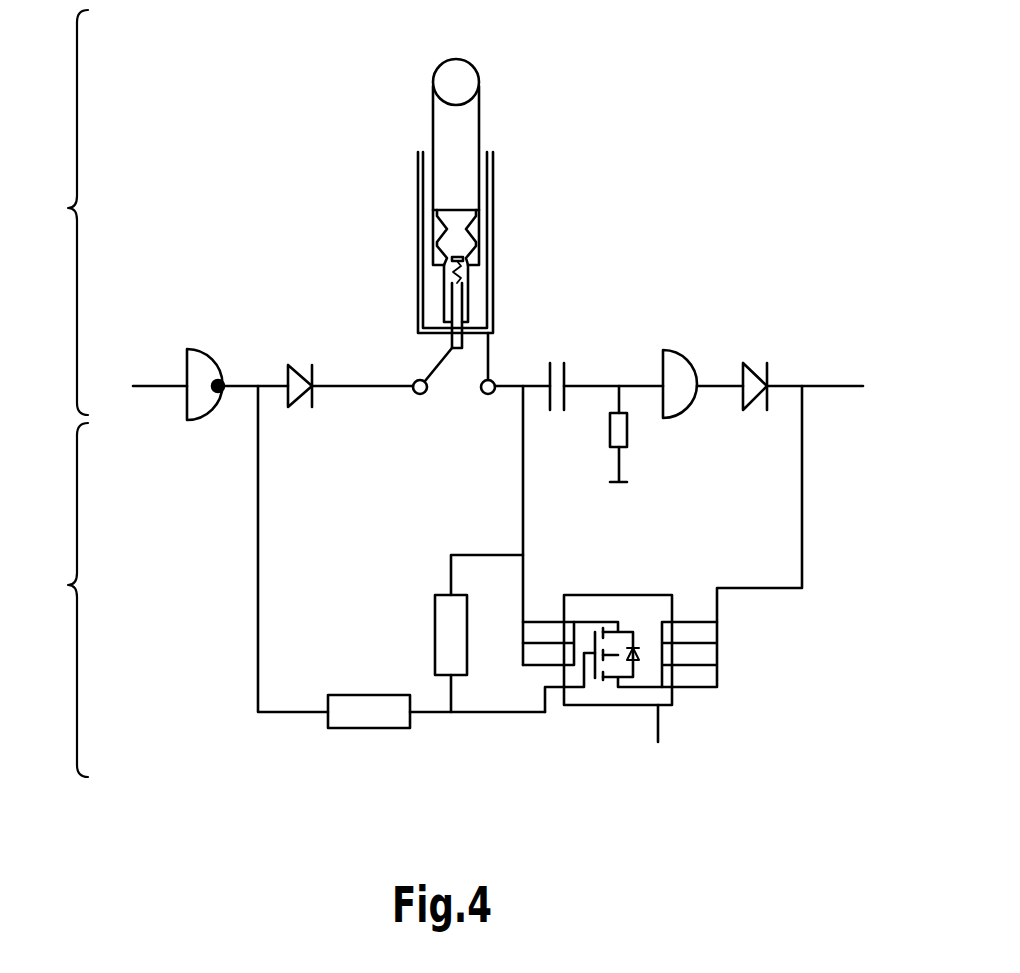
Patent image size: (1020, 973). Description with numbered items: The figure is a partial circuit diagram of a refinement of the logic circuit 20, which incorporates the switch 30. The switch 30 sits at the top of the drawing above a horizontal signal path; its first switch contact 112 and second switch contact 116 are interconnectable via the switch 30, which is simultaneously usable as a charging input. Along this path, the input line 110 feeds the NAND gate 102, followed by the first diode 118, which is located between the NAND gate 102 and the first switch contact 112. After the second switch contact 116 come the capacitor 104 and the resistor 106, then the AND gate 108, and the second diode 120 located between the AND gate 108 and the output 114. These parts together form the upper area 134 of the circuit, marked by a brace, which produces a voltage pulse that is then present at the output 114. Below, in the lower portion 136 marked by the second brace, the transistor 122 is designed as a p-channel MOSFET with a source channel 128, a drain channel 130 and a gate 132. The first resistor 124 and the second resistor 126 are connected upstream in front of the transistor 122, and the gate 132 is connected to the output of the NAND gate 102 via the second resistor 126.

The logic circuit 20 is at (704, 70).
The switch 30 is at (497, 123).
The NAND gate 102 is at (208, 353).
The capacitor 104 is at (559, 357).
The resistor 106 is at (603, 437).
The AND gate 108 is at (678, 348).
The input line 110 is at (143, 380).
The first switch contact 112 is at (418, 396).
The output 114 is at (842, 383).
The second switch contact 116 is at (487, 396).
The first diode 118 is at (300, 365).
The second diode 120 is at (760, 355).
The transistor 122 is at (623, 691).
The first resistor 124 is at (428, 625).
The second resistor 126 is at (358, 732).
The source channel 128 is at (549, 610).
The drain channel 130 is at (687, 603).
The gate 132 is at (551, 729).
The upper area 134 is at (51, 212).
The circuit portion 136 is at (51, 600).